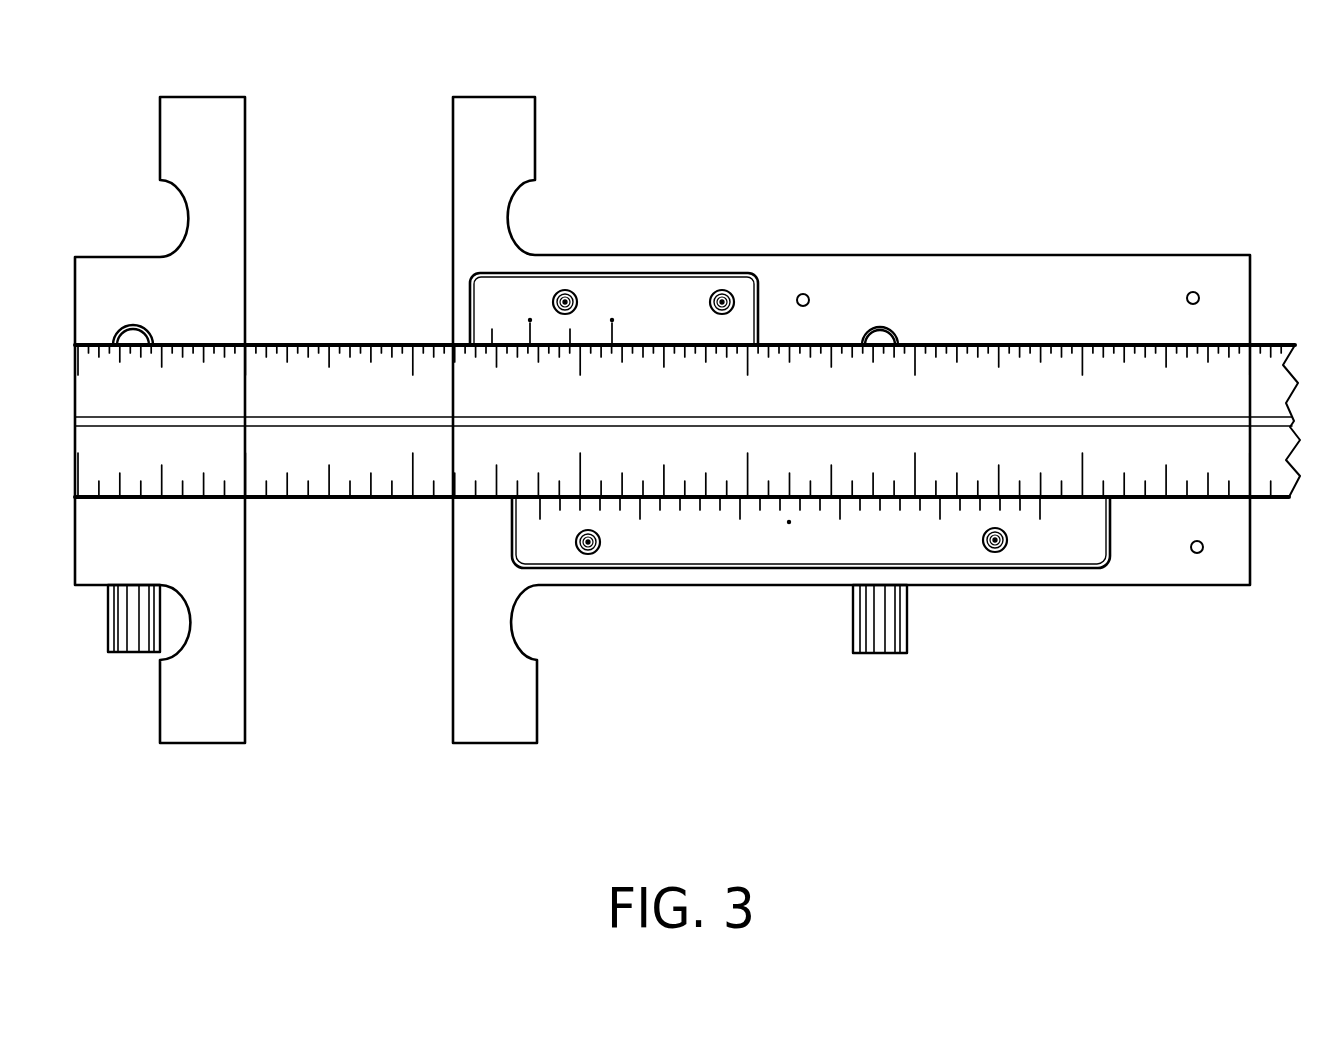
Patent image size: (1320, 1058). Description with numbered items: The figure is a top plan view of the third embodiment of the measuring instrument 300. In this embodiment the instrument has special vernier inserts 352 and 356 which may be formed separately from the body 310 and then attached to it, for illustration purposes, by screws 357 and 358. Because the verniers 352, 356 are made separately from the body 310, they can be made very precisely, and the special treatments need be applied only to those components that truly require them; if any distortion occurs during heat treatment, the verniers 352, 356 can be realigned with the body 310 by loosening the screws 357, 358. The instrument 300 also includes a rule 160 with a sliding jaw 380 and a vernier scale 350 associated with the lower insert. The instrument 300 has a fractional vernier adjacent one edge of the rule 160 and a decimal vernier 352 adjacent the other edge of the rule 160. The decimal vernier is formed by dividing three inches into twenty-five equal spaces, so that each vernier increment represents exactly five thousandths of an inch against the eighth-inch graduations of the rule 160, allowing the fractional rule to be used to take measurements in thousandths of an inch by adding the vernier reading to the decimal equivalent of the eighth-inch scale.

The instrument 300 is at (1134, 100).
The body 310 is at (920, 270).
The movable jaw 380 is at (222, 190).
The rule 160 is at (323, 443).
The vernier insert 356 is at (612, 337).
The screw 358 is at (567, 295).
The vernier insert 352 is at (811, 596).
The vernier scale 350 is at (540, 512).
The screw 357 is at (996, 545).